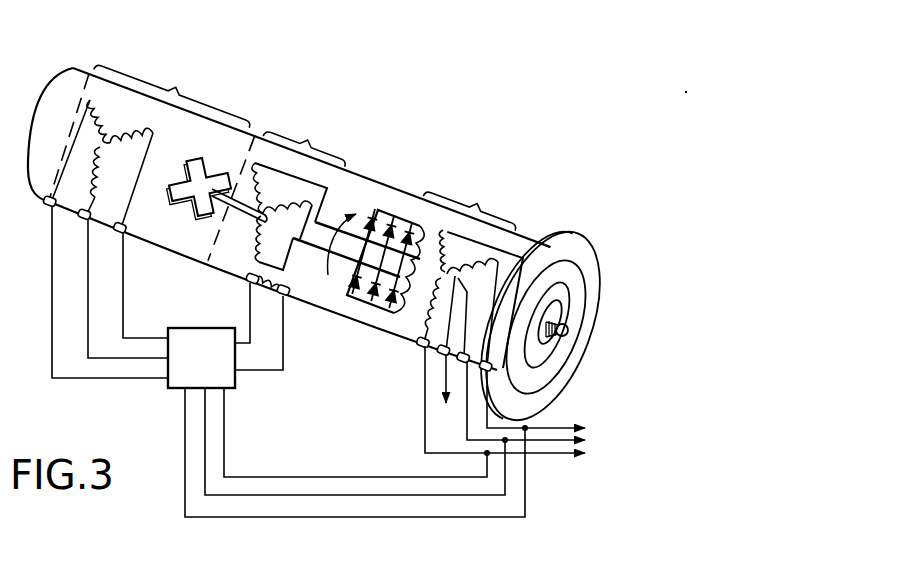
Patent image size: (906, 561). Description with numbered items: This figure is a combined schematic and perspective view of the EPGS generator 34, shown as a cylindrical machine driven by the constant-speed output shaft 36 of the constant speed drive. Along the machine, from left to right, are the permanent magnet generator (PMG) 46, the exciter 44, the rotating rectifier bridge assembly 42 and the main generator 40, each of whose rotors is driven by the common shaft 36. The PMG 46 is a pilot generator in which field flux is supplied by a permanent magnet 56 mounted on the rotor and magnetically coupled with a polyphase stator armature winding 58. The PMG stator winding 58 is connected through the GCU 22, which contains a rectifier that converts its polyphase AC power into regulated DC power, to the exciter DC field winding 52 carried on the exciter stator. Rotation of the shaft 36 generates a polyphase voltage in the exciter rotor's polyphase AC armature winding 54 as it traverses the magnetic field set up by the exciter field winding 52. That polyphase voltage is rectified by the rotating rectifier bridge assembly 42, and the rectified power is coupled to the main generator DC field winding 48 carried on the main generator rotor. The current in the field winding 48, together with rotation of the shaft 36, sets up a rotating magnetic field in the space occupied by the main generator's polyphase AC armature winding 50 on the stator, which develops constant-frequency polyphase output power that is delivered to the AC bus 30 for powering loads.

The GCU 22 is at (190, 328).
The bus 30 is at (592, 414).
The generator 34 is at (484, 126).
The output shaft 36 is at (568, 330).
The main generator 40 is at (465, 272).
The rotating rectifier bridge assembly 42 is at (398, 207).
The exciter 44 is at (337, 194).
The permanent magnet generator (PMG) 46 is at (151, 159).
The DC field winding 48 is at (418, 296).
The polyphase AC armature winding 50 is at (472, 250).
The DC field winding 52 is at (287, 274).
The polyphase AC armature winding 54 is at (276, 193).
The permanent magnet 56 is at (182, 183).
The polyphase stator armature winding 58 is at (122, 125).